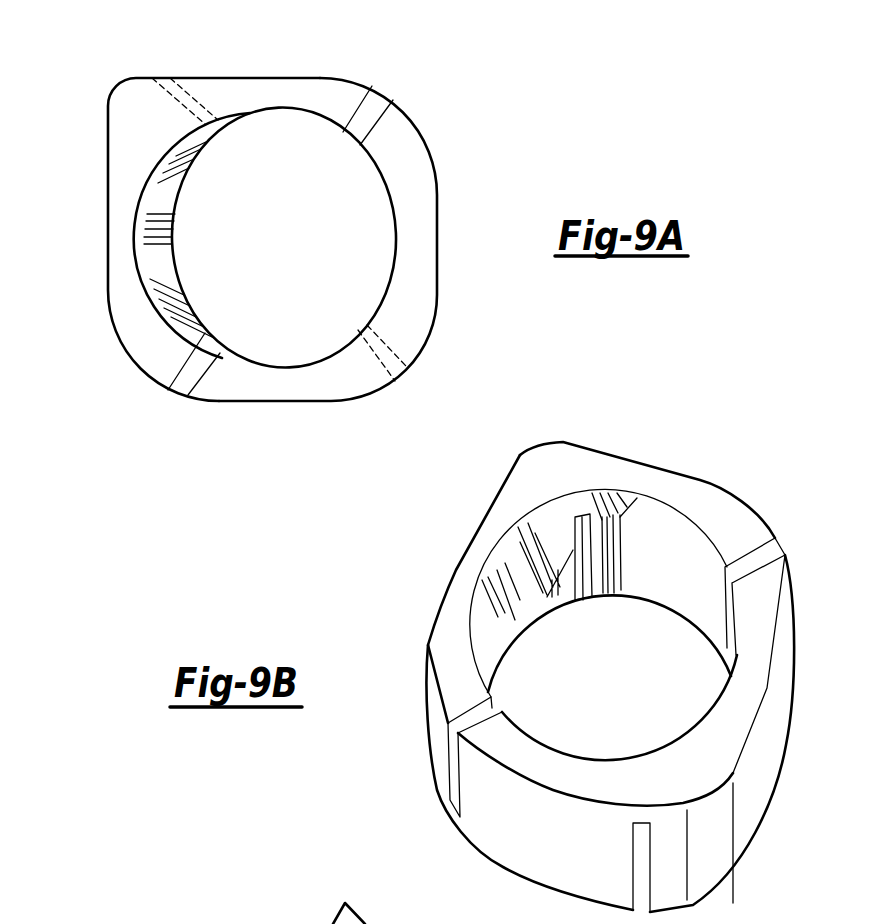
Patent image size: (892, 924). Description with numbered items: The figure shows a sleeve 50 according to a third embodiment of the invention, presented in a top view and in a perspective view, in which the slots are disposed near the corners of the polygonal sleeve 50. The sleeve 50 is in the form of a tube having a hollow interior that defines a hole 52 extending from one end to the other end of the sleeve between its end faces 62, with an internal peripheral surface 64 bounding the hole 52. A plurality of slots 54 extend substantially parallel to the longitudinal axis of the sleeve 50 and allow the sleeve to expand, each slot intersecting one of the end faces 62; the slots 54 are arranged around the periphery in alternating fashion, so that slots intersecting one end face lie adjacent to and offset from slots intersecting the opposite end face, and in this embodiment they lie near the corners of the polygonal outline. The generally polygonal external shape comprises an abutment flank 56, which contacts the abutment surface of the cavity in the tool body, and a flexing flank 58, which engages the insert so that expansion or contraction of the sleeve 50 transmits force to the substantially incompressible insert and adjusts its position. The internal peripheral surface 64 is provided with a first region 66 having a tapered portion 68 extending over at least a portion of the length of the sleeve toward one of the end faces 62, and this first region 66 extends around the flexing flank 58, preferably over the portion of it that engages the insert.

In FIG. 9B, the sleeve 50 is at (271, 923).
In FIG. 9A, the hole 52 is at (283, 250).
In FIG. 9A, the slots 54 is at (373, 108).
In FIG. 9B, the slots 54 is at (761, 557).
In FIG. 9A, the abutment flank 56 is at (438, 213).
In FIG. 9B, the abutment flank 56 is at (778, 682).
In FIG. 9A, the flexing flank 58 is at (108, 218).
In FIG. 9B, the flexing flank 58 is at (478, 530).
In FIG. 9A, the end faces 62 is at (415, 189).
In FIG. 9B, the end faces 62 is at (728, 763).
In FIG. 9B, the internal peripheral surface 64 is at (683, 593).
In FIG. 9B, the first region 66 is at (568, 460).
In FIG. 9A, the tapered portion 68 is at (163, 273).
In FIG. 9B, the tapered portion 68 is at (487, 607).